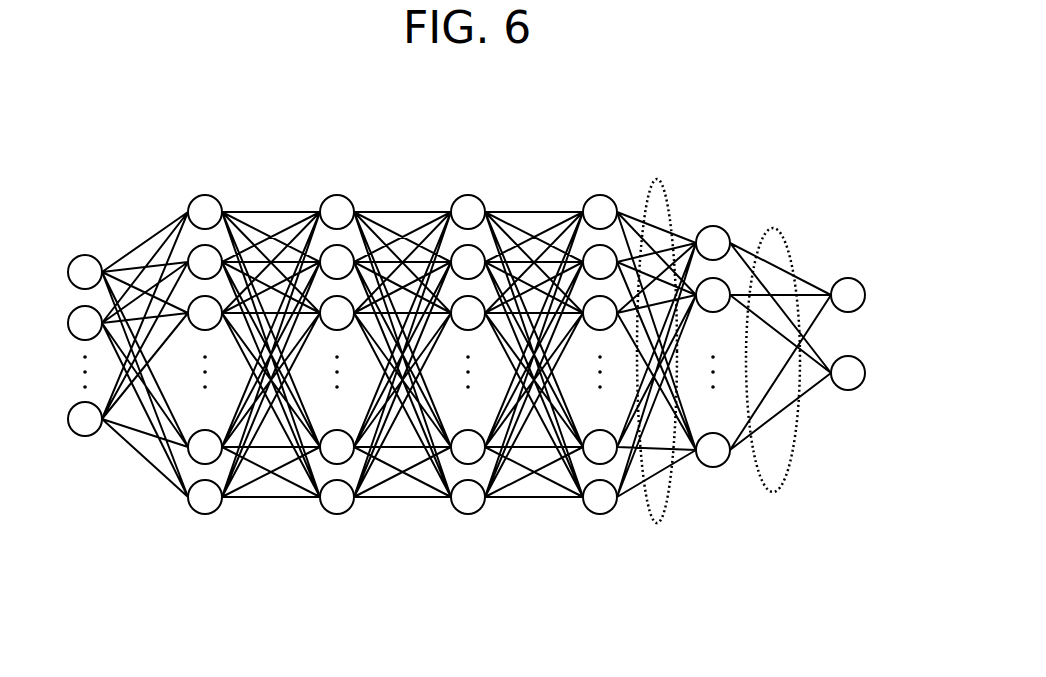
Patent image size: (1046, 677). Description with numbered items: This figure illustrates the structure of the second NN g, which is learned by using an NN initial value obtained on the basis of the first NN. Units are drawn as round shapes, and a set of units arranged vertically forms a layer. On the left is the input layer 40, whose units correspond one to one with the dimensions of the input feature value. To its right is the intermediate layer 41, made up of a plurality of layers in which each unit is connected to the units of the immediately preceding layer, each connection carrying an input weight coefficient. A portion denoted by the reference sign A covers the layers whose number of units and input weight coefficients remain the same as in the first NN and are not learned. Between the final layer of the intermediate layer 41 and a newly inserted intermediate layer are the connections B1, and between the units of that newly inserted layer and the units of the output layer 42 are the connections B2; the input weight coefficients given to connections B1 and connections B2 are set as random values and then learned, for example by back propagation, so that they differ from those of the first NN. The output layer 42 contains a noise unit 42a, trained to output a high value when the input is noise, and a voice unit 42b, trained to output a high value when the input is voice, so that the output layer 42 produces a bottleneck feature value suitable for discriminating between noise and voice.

The second neural network g is at (586, 136).
The portion with unchanged layers A is at (617, 183).
The input layer 40 is at (85, 446).
The intermediate layer 41 is at (402, 522).
The connections B1 is at (656, 180).
The connections B2 is at (776, 228).
The output layer 42 is at (858, 407).
The noise unit 42a is at (865, 295).
The voice unit 42b is at (865, 373).